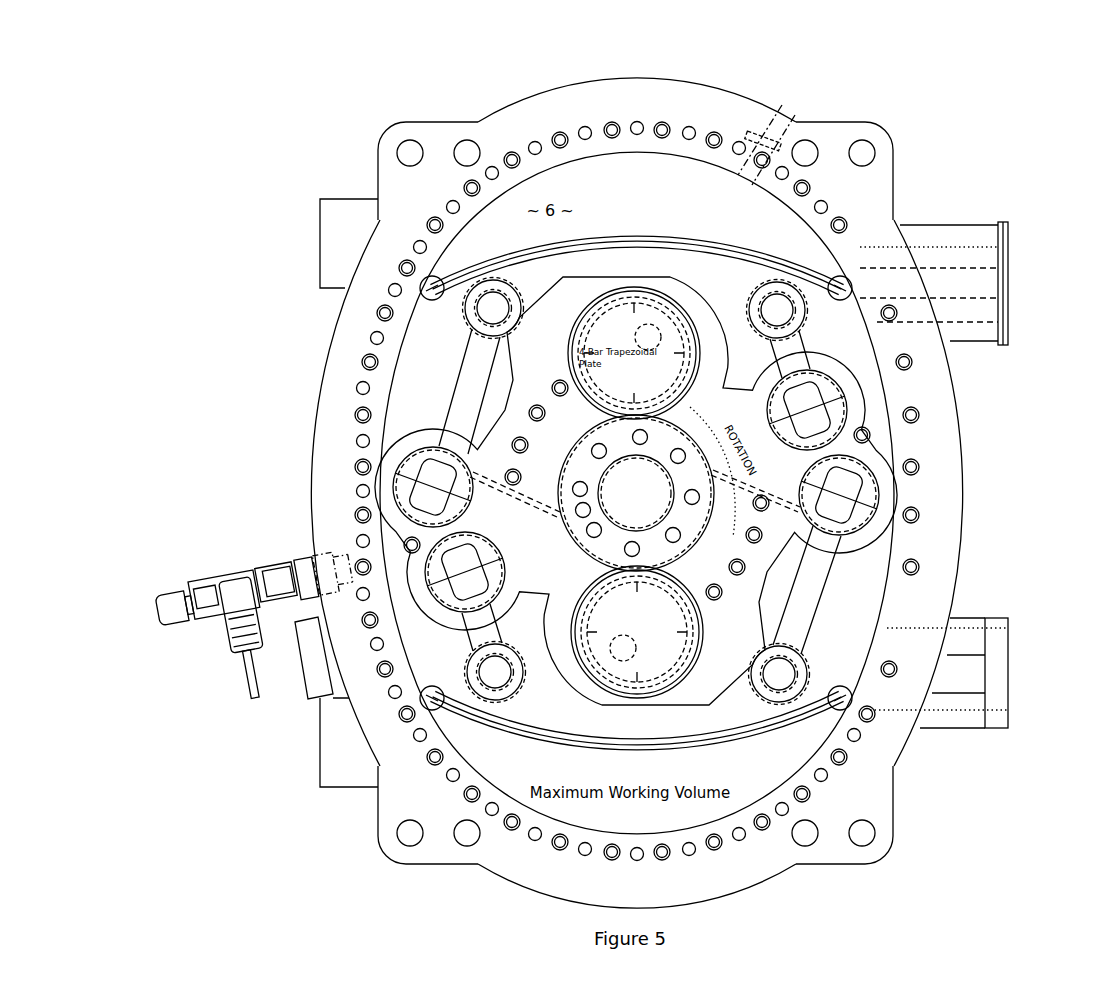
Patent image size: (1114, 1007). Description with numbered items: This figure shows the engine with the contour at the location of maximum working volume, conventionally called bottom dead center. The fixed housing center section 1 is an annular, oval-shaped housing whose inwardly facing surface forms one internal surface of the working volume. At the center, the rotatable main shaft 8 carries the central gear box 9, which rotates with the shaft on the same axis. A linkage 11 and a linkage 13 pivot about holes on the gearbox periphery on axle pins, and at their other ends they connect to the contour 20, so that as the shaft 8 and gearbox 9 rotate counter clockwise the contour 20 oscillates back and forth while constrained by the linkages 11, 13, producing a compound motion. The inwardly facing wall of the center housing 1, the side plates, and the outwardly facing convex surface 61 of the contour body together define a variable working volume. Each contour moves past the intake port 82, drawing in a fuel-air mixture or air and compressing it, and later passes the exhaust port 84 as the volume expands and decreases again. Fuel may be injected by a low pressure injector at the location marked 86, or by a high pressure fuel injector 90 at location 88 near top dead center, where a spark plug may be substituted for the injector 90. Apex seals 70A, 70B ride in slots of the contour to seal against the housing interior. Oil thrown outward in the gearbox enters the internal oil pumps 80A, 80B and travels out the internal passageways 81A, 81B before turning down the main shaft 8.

The fixed housing center section 1 is at (965, 498).
The main shaft 8 is at (628, 505).
The central gear box 9 is at (683, 303).
The linkage 11 is at (812, 350).
The linkage 13 is at (445, 400).
The contour 20 is at (517, 257).
The outwardly facing convex surface 61 is at (727, 237).
The apex seal 70A is at (840, 288).
The apex seal 70B is at (432, 288).
The internal oil pump 80A is at (605, 645).
The internal oil pump 80B is at (647, 317).
The internal passageway 81A is at (665, 605).
The internal passageway 81B is at (590, 340).
The intake port 82 is at (1012, 275).
The exhaust port 84 is at (1012, 678).
The low pressure fuel injector location 86 is at (758, 150).
The high pressure fuel injector location 88 is at (343, 573).
The high pressure fuel injector 90 is at (275, 585).